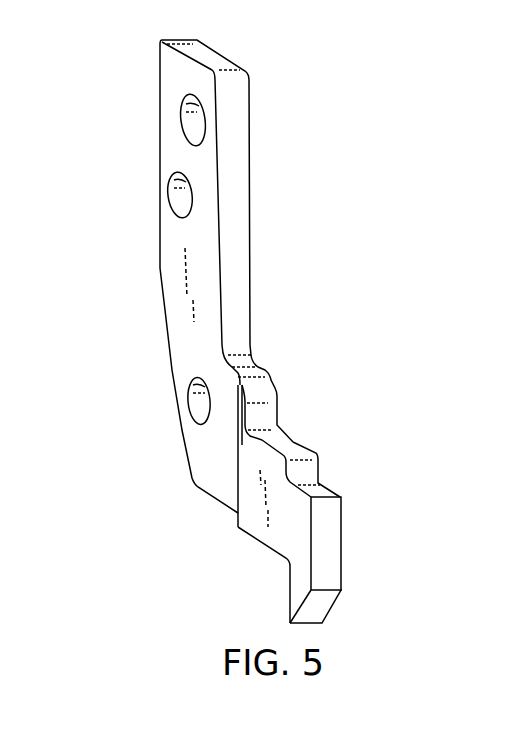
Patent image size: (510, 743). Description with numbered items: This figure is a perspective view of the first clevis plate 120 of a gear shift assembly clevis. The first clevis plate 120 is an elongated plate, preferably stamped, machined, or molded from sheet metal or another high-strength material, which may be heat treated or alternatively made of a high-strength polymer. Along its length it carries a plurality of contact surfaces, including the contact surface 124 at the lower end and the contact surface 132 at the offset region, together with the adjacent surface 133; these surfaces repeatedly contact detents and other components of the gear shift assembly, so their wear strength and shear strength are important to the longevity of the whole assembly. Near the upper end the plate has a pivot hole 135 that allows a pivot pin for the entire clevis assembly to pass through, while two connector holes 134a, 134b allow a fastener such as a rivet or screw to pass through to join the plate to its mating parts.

The first clevis plate 120 is at (250, 290).
The contact surface 124 is at (291, 593).
The contact surface 132 is at (288, 444).
The angled portion 133 is at (322, 493).
The connector hole 134a is at (174, 197).
The connector hole 134b is at (188, 403).
The pivot hole 135 is at (186, 123).